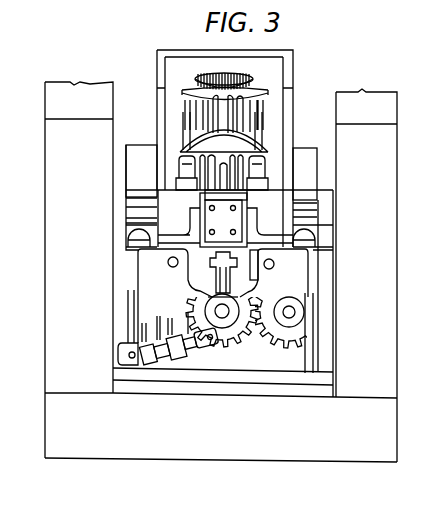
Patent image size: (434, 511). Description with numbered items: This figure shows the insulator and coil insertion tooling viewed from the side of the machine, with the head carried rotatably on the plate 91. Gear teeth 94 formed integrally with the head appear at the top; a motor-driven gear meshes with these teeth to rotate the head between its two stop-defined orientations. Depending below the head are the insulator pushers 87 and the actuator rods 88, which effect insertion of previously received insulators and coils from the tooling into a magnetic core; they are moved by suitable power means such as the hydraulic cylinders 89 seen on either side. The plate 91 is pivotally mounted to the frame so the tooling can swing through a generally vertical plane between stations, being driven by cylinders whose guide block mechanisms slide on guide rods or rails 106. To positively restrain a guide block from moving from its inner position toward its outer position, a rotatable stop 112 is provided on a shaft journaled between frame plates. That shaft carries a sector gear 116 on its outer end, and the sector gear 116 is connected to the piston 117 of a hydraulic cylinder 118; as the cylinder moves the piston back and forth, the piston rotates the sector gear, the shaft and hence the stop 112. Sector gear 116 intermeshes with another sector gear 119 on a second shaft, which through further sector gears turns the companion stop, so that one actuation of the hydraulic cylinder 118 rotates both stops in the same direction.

The plate 91 is at (185, 50).
The gear teeth 94 is at (205, 76).
The actuator rods 88 is at (228, 110).
The insulator pushers 87 is at (243, 100).
The hydraulic cylinders 89 is at (190, 171).
The guide rods or rails 106 is at (168, 263).
The rotatable stop 112 is at (233, 278).
The sector gear 116 is at (249, 331).
The sector gear 119 is at (298, 333).
The piston 117 is at (188, 334).
The hydraulic cylinder 118 is at (155, 342).